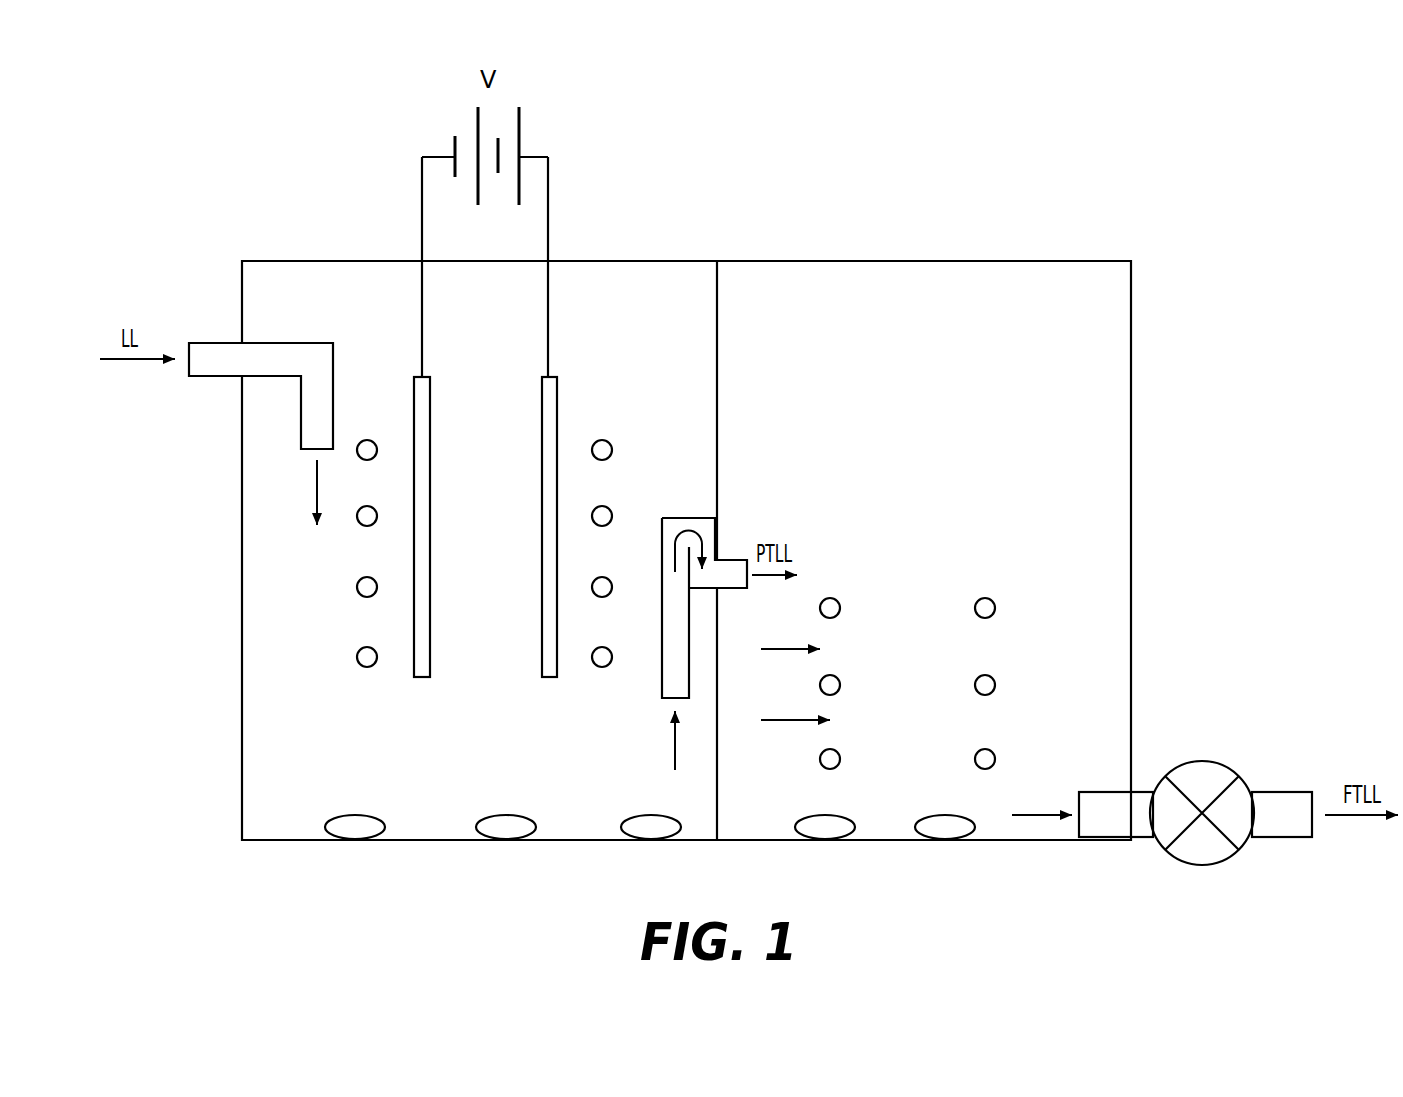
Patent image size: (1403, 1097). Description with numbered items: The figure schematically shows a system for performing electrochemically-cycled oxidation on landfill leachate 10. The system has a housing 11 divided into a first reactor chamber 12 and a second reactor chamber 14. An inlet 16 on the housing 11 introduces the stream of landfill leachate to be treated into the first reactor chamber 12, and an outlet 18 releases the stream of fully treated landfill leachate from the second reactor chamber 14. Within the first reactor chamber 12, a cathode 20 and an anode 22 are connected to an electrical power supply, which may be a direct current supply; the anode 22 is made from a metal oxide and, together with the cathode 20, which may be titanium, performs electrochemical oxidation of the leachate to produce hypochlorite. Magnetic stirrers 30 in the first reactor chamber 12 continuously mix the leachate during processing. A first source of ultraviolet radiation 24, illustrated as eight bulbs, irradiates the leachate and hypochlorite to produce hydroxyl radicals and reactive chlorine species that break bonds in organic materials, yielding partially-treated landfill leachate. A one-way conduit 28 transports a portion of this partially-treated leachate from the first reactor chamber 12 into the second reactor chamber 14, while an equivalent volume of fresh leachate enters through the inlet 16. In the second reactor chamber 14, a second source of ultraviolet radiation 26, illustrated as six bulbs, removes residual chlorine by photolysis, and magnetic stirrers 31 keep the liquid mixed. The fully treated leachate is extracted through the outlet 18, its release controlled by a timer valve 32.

The system for performing electrochemically-cycled oxidation on landfill leachate 10 is at (695, 441).
The housing 11 is at (777, 260).
The first reactor chamber 12 is at (304, 285).
The second reactor chamber 14 is at (1074, 290).
The inlet 16 is at (231, 334).
The outlet 18 is at (1139, 781).
The cathode 20 is at (430, 653).
The anode 22 is at (558, 388).
The first source of ultraviolet radiation 24 is at (375, 443).
The second source of ultraviolet radiation 26 is at (838, 616).
The one-way conduit 28 is at (660, 688).
The magnetic stirrers 30 is at (370, 840).
The magnetic stirrers 31 is at (840, 840).
The timer valve 32 is at (1229, 766).